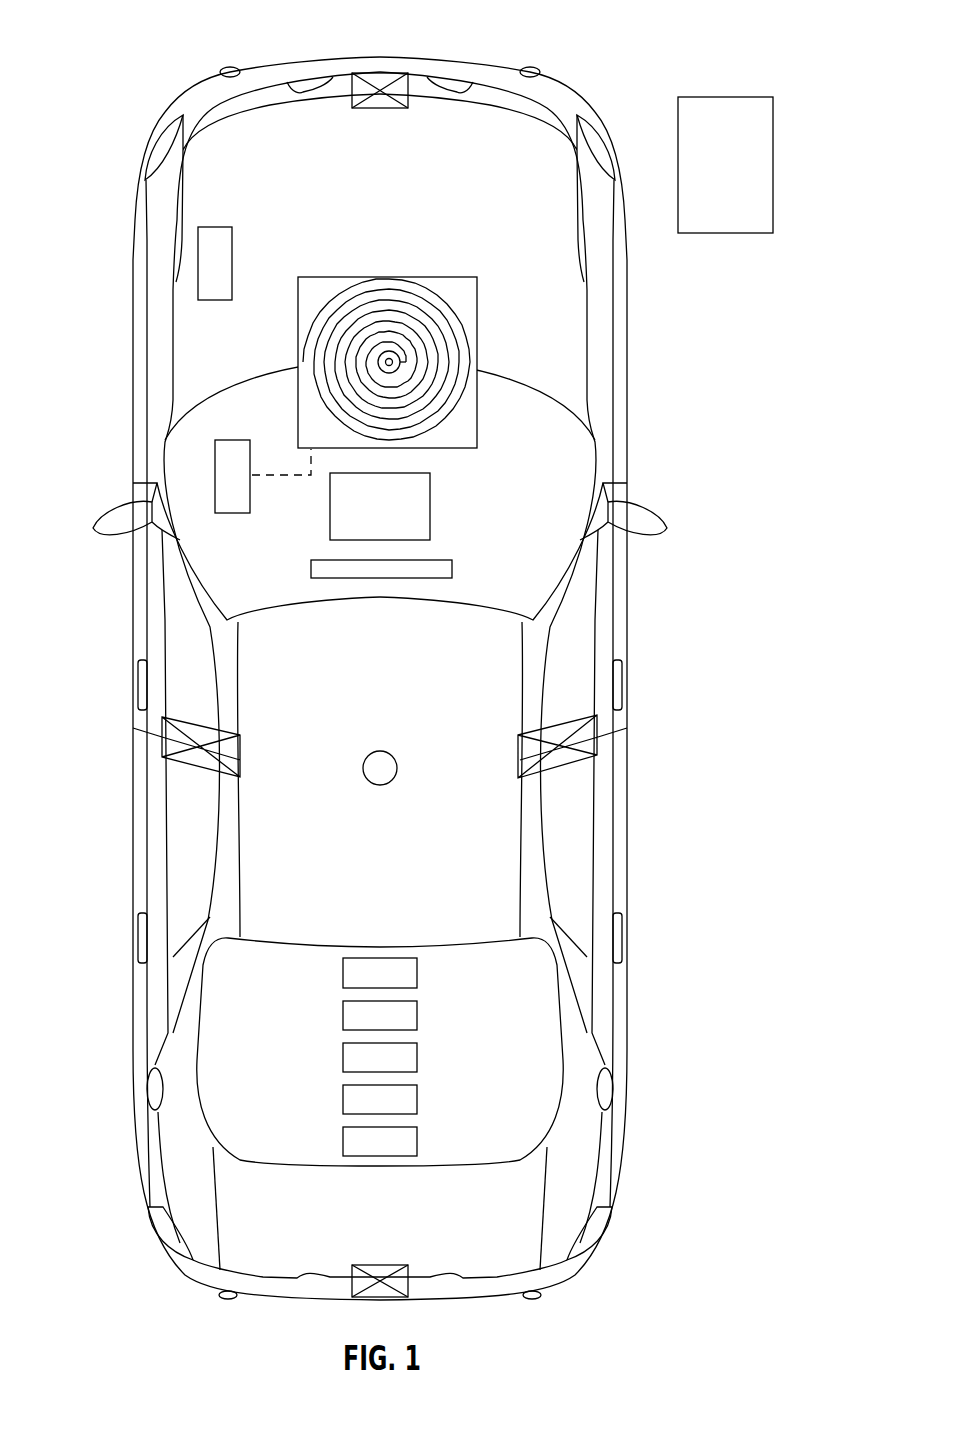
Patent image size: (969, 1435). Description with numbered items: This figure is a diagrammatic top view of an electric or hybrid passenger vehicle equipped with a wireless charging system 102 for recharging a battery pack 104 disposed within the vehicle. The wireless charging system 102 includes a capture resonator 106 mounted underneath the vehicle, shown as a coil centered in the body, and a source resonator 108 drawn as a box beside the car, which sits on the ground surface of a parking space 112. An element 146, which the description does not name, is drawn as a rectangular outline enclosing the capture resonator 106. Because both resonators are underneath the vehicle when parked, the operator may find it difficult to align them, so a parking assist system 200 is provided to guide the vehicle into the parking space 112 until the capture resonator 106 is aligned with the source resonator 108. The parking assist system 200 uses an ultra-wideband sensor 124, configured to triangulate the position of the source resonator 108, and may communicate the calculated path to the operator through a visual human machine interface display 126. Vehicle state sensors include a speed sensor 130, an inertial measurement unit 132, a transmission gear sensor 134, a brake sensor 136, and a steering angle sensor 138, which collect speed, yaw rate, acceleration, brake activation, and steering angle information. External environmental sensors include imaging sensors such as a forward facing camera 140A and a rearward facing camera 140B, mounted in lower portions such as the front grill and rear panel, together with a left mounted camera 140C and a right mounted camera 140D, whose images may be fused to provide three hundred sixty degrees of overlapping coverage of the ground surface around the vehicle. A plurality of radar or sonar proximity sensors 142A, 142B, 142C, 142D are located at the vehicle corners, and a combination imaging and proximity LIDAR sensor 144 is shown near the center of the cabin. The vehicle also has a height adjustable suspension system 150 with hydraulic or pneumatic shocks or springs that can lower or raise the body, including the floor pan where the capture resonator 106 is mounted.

The wireless charging system 102 is at (322, 262).
The battery pack 104 is at (214, 464).
The capture resonator 106 is at (376, 323).
The source resonator 108 is at (752, 100).
The parking space 112 is at (626, 69).
The ultra-wideband (UWB) sensor 124 is at (427, 359).
The human machine interface (HMI) display 126 is at (452, 568).
The speed sensor 130 is at (418, 973).
The inertial measurement unit (IMU) 132 is at (418, 1015).
The transmission gear sensor 134 is at (418, 1057).
The brake sensor 136 is at (418, 1099).
The steering angle sensor 138 is at (343, 1141).
The forward facing camera 140A is at (381, 80).
The rearward facing camera 140B is at (381, 1292).
The left mounted camera 140C is at (240, 737).
The right mounted camera 140D is at (520, 737).
The proximity sensor 142A is at (229, 66).
The proximity sensor 142B is at (531, 66).
The proximity sensor 142C is at (228, 1300).
The proximity sensor 142D is at (532, 1300).
The Light Detection and Ranging (LIDAR) sensor 144 is at (383, 763).
The housing 146 is at (477, 302).
The height adjustable suspension system 150 is at (198, 257).
The parking assist system 200 is at (432, 500).